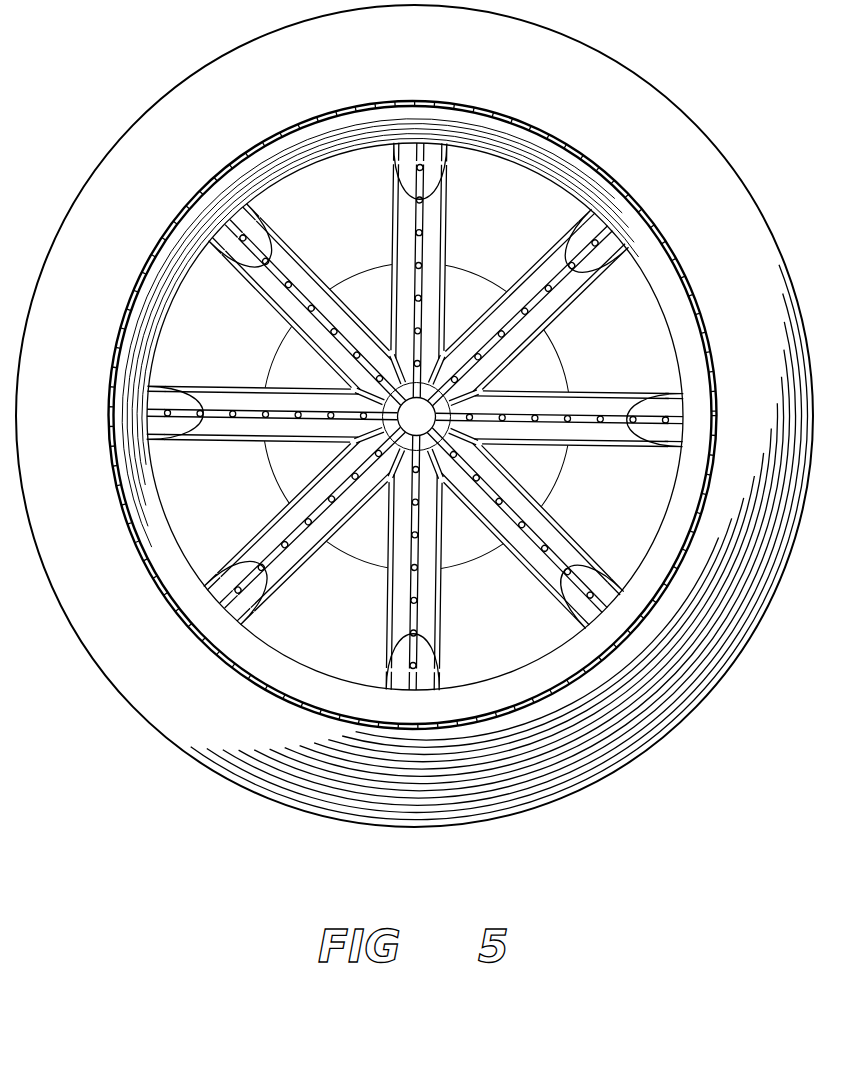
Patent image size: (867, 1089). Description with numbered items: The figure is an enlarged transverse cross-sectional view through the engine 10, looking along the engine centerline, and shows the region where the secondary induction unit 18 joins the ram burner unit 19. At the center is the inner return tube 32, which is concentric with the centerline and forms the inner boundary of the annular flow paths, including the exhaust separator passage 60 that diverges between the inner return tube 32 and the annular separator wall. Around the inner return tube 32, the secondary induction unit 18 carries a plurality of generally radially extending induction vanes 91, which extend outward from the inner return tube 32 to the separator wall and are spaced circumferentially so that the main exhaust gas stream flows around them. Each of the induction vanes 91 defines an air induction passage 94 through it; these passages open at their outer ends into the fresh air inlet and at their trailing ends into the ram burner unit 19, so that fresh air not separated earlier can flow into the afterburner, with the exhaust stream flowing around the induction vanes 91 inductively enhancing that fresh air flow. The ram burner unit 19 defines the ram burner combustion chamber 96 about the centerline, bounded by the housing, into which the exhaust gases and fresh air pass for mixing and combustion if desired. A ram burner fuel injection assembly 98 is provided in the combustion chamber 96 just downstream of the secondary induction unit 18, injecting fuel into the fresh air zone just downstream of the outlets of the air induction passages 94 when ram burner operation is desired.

The engine 10 is at (626, 55).
The secondary induction unit 18 is at (577, 204).
The ram burner unit 19 is at (695, 288).
The ram burner combustion chamber 96 is at (703, 347).
The exhaust separator passage 60 is at (545, 472).
The induction vanes 91 is at (387, 304).
The air induction passage 94 is at (490, 310).
The ram burner fuel injection assembly 98 is at (420, 250).
The inner return tube 32 is at (409, 425).